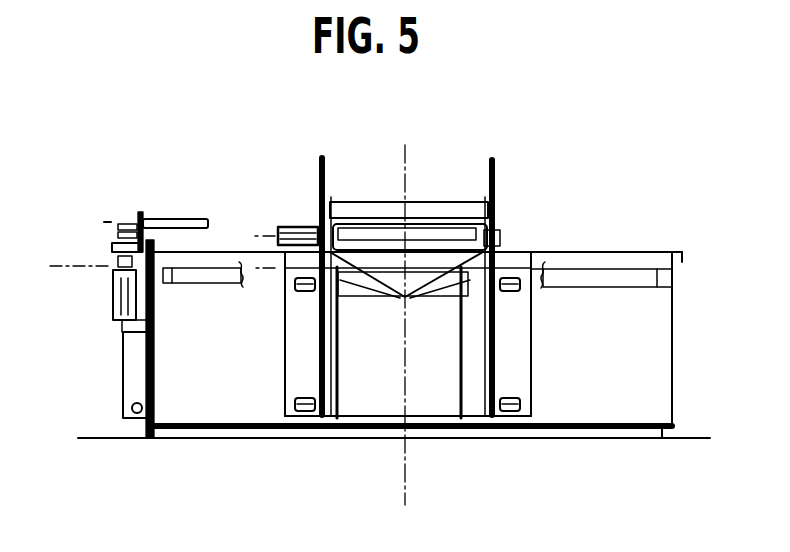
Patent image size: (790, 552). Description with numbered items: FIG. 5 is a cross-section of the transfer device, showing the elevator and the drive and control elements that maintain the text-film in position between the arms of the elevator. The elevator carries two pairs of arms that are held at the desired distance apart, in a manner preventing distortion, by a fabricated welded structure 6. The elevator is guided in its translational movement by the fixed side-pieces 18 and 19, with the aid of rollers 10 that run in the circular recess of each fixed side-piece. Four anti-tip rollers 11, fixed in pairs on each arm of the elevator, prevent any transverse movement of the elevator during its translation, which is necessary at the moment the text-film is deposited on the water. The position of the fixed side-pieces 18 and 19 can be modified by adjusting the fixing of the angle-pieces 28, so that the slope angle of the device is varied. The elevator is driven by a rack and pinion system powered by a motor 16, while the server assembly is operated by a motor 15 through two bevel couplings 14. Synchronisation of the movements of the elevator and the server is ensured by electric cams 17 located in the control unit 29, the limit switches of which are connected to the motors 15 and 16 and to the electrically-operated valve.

The fabricated welded structure 6 is at (412, 300).
The rollers 10 is at (496, 244).
The anti-tip rollers 11 is at (322, 327).
The bevel couplings 14 is at (132, 220).
The motor 15 is at (113, 297).
The motor 16 is at (296, 226).
The electric cams 17 is at (137, 413).
The fixed side-piece 18 is at (326, 168).
The fixed side-piece 19 is at (498, 173).
The angle-pieces 28 is at (302, 413).
The control unit 29 is at (137, 375).